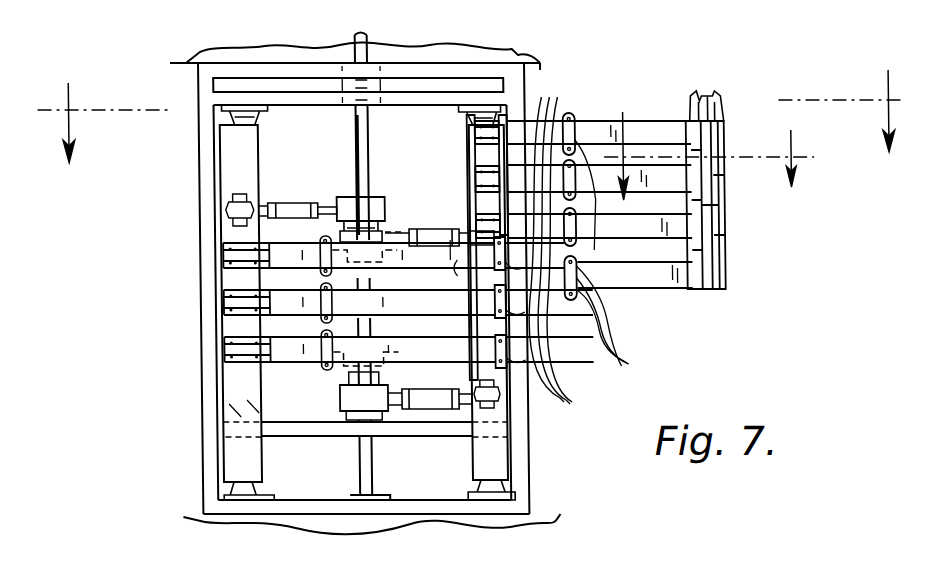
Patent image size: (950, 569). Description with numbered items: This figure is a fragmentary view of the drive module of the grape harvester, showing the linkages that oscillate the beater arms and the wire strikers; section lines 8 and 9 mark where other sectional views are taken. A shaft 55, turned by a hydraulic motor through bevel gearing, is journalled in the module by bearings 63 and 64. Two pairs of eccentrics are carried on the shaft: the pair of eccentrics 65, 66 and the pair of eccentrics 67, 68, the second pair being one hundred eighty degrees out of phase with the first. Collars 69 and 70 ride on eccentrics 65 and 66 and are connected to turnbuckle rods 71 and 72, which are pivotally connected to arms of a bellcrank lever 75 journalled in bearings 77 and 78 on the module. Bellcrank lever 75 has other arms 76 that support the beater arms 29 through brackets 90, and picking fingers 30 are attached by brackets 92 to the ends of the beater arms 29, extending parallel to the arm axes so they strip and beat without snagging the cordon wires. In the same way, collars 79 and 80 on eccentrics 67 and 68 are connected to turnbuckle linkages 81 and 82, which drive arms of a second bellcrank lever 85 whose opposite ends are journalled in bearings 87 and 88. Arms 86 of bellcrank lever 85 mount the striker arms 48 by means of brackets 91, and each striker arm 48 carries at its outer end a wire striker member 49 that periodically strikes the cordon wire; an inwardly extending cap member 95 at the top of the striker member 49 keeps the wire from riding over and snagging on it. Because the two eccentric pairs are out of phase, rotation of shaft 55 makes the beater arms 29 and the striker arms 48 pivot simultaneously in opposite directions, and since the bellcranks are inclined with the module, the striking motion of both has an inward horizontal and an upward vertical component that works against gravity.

The shaft 55 is at (352, 44).
The bearing 63 is at (348, 107).
The bearing 64 is at (352, 495).
The eccentric 65 is at (366, 195).
The eccentric 66 is at (392, 358).
The eccentric 67 is at (385, 270).
The eccentric 68 is at (328, 425).
The collar 69 is at (352, 192).
The collar 70 is at (348, 380).
The turnbuckle rod 71 is at (302, 202).
The turnbuckle rod 72 is at (228, 396).
The bellcrank lever 75 is at (225, 150).
The arms 76 is at (225, 348).
The bearing 77 is at (235, 500).
The bearing 78 is at (232, 110).
The collar 79 is at (372, 208).
The collar 80 is at (337, 402).
The turnbuckle linkage 81 is at (452, 230).
The turnbuckle linkage 82 is at (428, 410).
The bellcrank lever 85 is at (494, 453).
The arms 86 is at (528, 135).
The bearing 87 is at (489, 500).
The bearing 88 is at (505, 62).
The brackets 90 is at (318, 262).
The brackets 91 is at (574, 226).
The brackets 92 is at (556, 396).
The beater arms 29 is at (452, 318).
The picking fingers 30 is at (610, 370).
The arms 48 is at (670, 128).
The wire striker member 49 is at (712, 206).
The cap member 95 is at (718, 104).
The section line 8- 8 is at (473, 114).
The section line 9- 9 is at (703, 144).